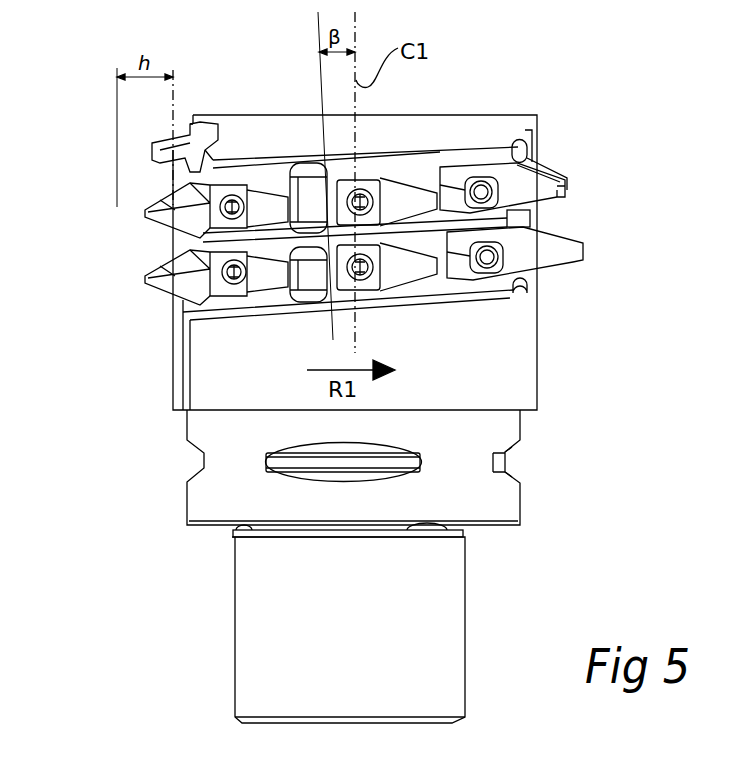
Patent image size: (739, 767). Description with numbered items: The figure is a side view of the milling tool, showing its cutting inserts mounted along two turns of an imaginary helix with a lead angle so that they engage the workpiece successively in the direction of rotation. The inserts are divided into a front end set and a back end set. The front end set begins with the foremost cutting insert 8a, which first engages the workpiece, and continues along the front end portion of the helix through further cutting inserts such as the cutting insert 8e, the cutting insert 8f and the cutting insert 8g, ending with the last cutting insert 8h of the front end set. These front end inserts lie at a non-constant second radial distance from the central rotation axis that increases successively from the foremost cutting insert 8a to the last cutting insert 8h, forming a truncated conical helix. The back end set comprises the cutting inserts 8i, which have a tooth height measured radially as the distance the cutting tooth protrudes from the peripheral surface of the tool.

The foremost cutting insert 8a is at (160, 157).
The cutting inserts of the back end set 8i is at (128, 217).
The last cutting insert of the front end set 8h is at (308, 188).
The cutting insert of the front end set 8g is at (443, 182).
The cutting insert of the front end set 8e is at (569, 182).
The cutting insert of the front end set 8f is at (558, 190).